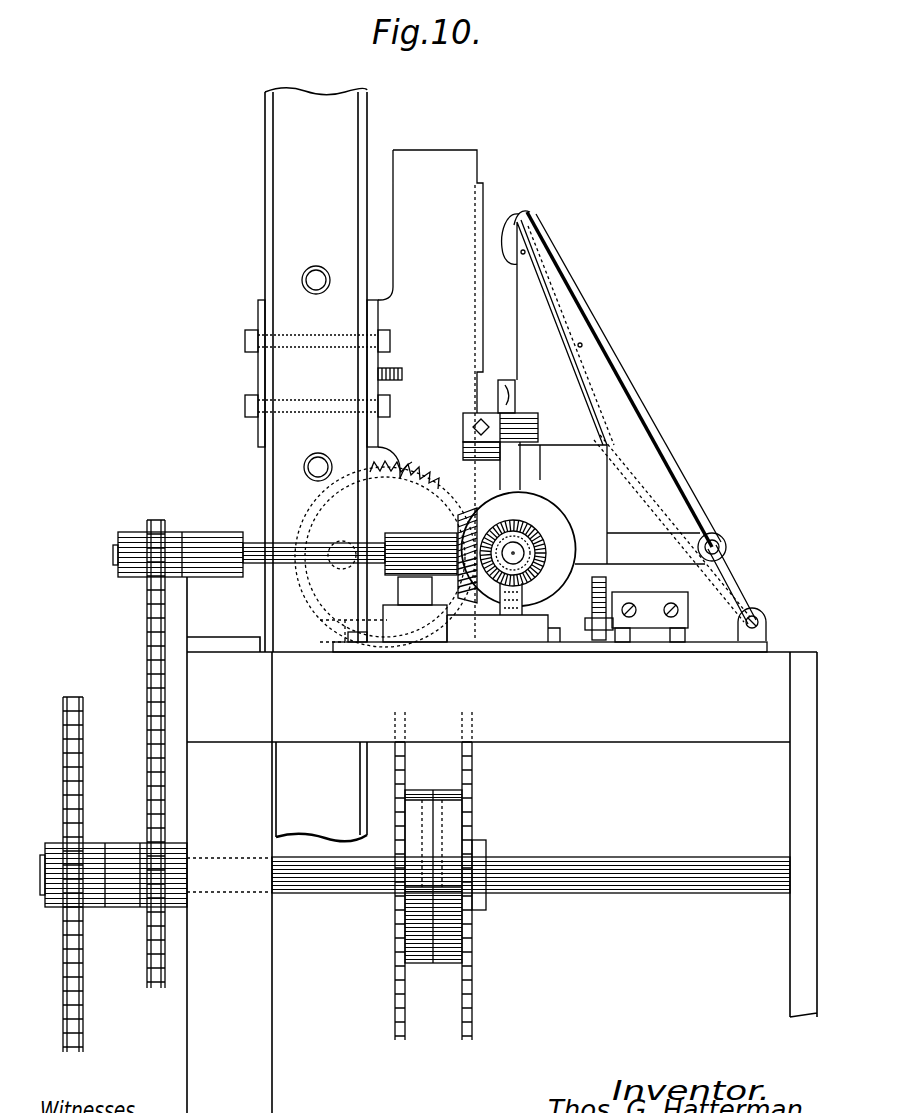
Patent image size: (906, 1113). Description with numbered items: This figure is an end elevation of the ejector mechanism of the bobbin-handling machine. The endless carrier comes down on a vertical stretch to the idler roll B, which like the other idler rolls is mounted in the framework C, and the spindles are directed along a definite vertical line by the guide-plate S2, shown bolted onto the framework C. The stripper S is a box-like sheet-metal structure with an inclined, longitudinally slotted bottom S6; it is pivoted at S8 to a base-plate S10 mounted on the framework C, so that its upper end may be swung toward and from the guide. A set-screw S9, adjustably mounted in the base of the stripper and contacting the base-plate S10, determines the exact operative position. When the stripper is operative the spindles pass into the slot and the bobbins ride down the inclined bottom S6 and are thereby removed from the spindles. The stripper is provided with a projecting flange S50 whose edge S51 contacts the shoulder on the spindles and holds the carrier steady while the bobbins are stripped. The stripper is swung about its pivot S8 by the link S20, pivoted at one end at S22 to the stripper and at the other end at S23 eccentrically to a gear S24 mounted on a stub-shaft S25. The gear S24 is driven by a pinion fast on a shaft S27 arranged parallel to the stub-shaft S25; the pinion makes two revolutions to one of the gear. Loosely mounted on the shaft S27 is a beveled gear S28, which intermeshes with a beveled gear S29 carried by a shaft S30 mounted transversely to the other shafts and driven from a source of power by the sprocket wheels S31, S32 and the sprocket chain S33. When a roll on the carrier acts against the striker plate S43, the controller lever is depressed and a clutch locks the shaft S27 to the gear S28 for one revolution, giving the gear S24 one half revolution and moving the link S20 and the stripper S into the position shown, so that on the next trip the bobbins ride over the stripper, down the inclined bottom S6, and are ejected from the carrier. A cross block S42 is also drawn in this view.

The framework C is at (275, 1022).
The idler roll B is at (403, 1040).
The stripper S is at (610, 388).
The guide-plate S2 is at (458, 162).
The inclined bottom S6 is at (627, 477).
The pivot S8 is at (757, 615).
The set-screw S9 is at (604, 575).
The base-plate S10 is at (613, 647).
The link S20 is at (670, 533).
The pivot S22 is at (716, 538).
The pivotal connection S23 is at (263, 537).
The gear S24 is at (392, 540).
The stub-shaft S25 is at (405, 468).
The shaft S27 is at (515, 551).
The beveled gear S28 is at (556, 508).
The beveled gear S29 is at (465, 505).
The shaft S30 is at (250, 540).
The sprocket wheel S31 is at (143, 530).
The sprocket wheel S32 is at (153, 862).
The sprocket chain S33 is at (148, 680).
The cross block S42 is at (535, 410).
The striker plate S43 is at (503, 377).
The projecting flange S50 is at (533, 307).
The edge S51 is at (547, 204).